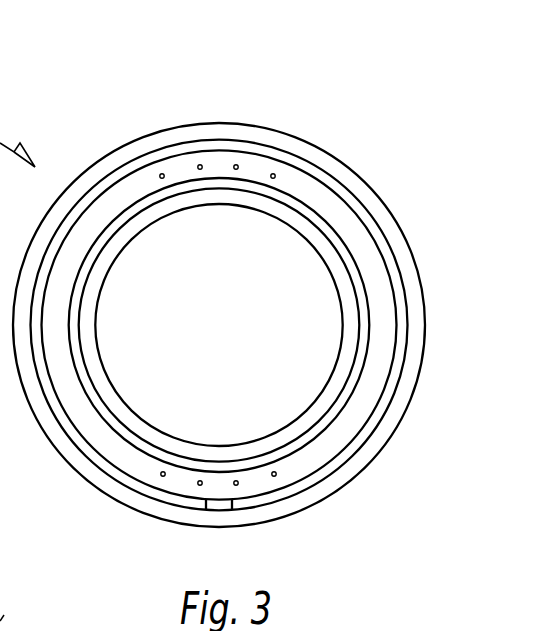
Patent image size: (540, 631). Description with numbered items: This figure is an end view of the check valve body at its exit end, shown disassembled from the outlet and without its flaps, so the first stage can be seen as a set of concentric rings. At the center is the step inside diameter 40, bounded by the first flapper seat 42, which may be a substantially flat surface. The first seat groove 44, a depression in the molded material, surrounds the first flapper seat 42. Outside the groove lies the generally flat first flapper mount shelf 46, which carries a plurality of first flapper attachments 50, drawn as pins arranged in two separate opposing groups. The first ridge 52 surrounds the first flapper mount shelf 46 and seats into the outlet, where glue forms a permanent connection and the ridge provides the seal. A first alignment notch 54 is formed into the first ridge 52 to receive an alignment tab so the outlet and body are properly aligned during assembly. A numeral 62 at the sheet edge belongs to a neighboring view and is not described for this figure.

The step inside diameter 40 is at (218, 446).
The first flapper seat 42 is at (90, 328).
The first seat groove 44 is at (142, 205).
The first flapper mount shelf 46 is at (135, 182).
The first flapper attachments 50 is at (273, 174).
The first ridge 52 is at (298, 162).
The first alignment notch 54 is at (218, 511).
The component of adjacent figure 62 is at (0, 620).